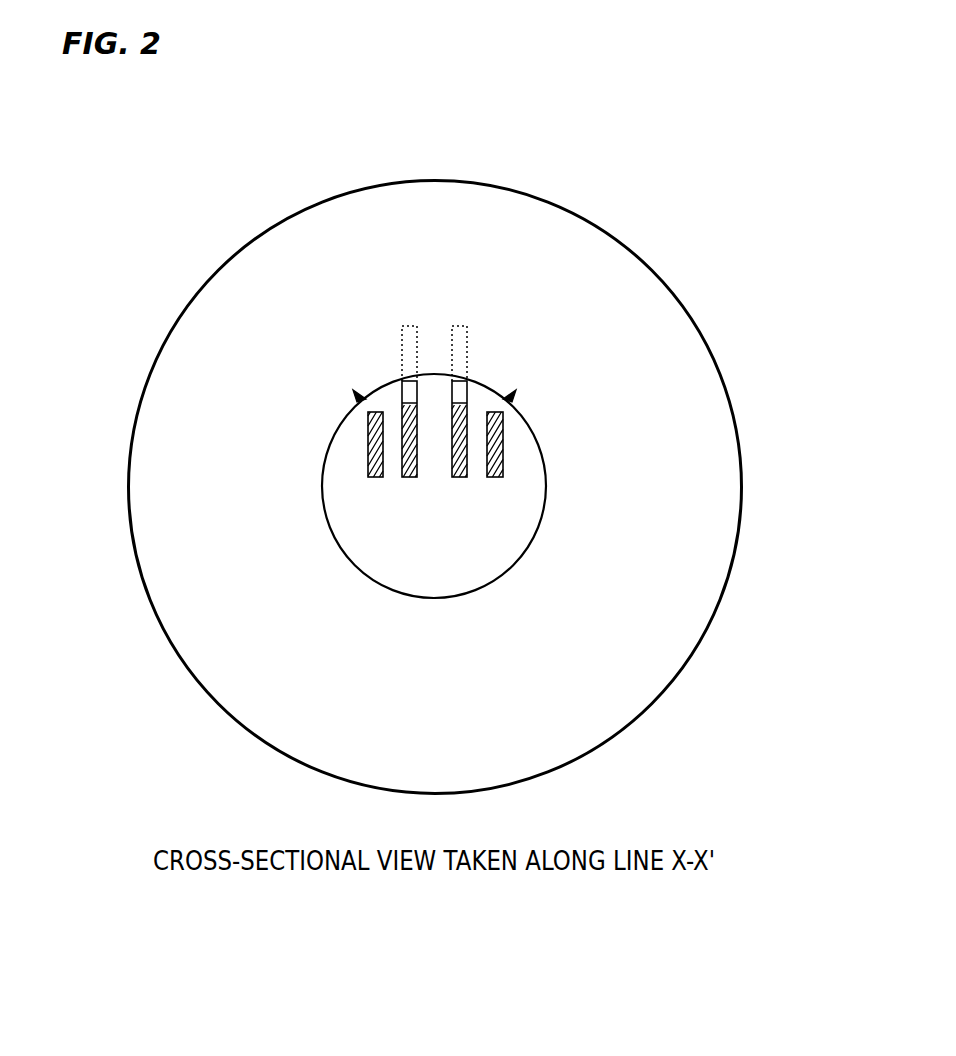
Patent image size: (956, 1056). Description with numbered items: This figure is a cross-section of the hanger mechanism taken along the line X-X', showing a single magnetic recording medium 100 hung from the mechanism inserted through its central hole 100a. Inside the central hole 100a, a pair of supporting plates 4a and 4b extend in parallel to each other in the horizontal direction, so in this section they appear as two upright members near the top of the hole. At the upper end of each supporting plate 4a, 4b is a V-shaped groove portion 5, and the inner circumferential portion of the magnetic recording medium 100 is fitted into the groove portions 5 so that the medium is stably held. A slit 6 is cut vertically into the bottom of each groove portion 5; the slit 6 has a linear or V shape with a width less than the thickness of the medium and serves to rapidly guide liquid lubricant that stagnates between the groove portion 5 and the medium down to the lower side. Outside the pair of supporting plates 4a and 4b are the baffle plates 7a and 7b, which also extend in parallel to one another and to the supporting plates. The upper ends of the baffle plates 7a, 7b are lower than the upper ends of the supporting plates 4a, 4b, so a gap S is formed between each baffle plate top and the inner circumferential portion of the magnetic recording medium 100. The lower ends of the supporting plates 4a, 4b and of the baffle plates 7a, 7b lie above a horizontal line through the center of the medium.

The magnetic recording medium 100 is at (708, 627).
The central hole 100a is at (398, 590).
The baffle plate 7a is at (367, 463).
The baffle plate 7b is at (503, 463).
The supporting plate 4a is at (406, 326).
The supporting plate 4b is at (462, 326).
The V-shaped groove portion 5 is at (402, 353).
The slit 6 is at (410, 395).
The gap S is at (360, 396).